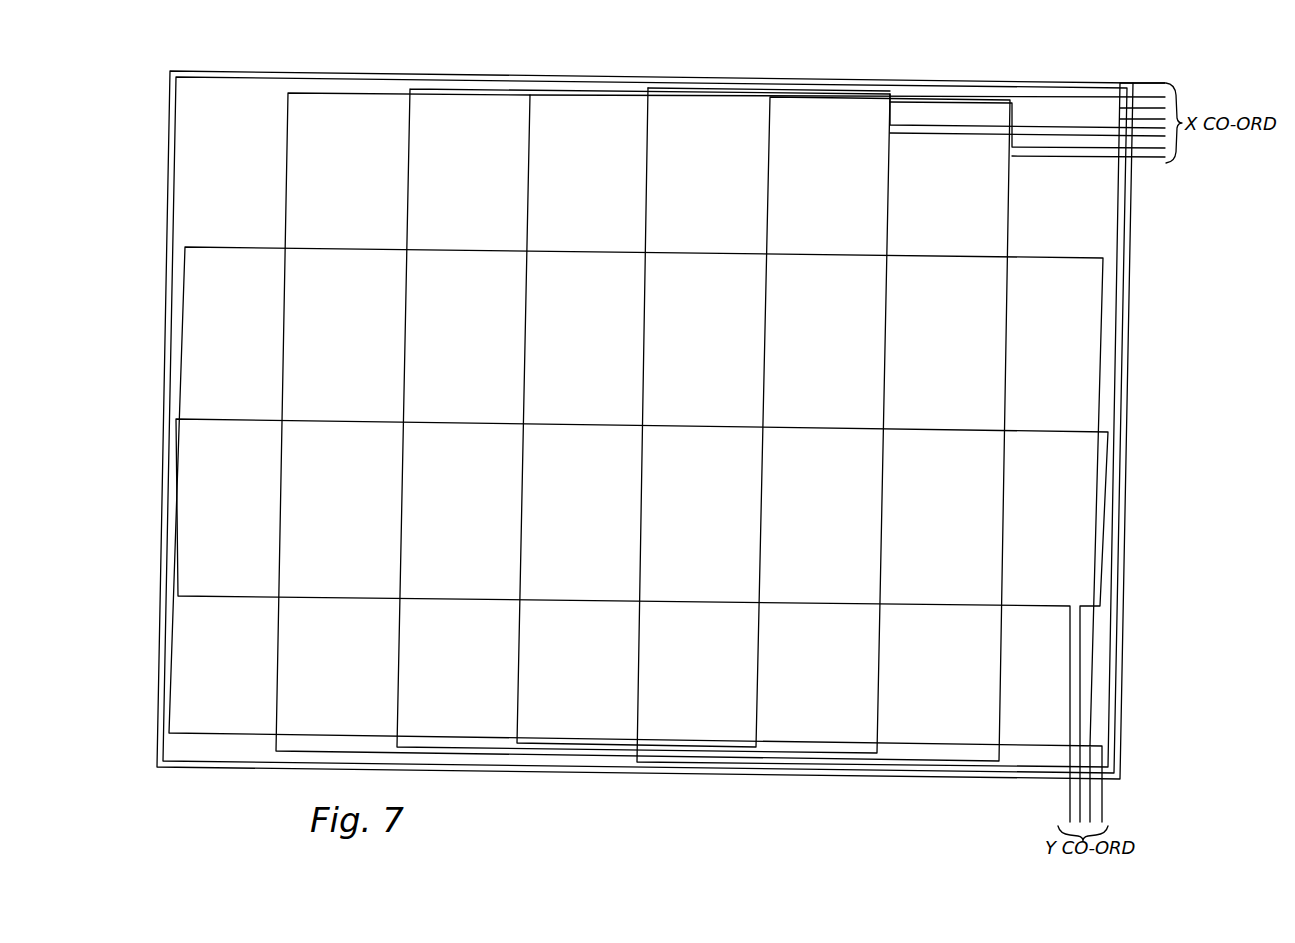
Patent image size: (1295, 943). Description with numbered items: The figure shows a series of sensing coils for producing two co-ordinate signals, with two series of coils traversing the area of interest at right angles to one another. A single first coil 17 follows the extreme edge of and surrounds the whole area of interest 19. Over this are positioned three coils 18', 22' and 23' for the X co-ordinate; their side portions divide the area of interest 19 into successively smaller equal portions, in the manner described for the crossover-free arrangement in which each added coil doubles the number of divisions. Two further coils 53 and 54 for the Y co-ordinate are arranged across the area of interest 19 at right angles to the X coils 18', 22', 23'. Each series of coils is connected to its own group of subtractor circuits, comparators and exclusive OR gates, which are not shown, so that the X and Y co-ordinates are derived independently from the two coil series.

The first coil 17 is at (172, 152).
The area of interest 19 is at (188, 70).
The X co-ordinate coil 23' is at (706, 397).
The X co-ordinate coil 22' is at (772, 393).
The X co-ordinate coil 18' is at (891, 401).
The Y co-ordinate coil 53 is at (172, 627).
The Y co-ordinate coil 54 is at (178, 542).